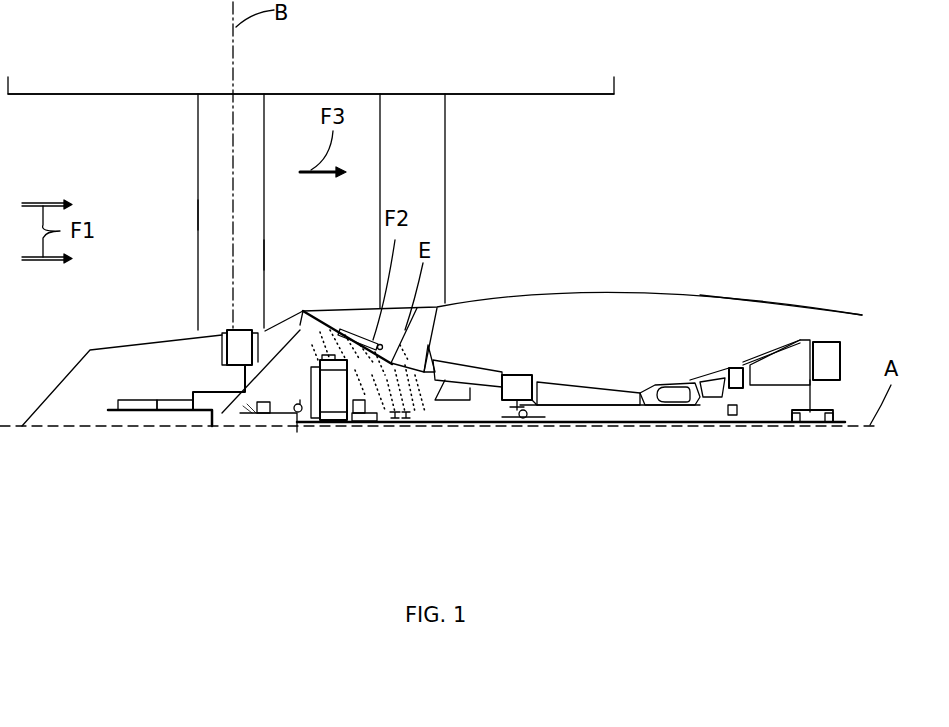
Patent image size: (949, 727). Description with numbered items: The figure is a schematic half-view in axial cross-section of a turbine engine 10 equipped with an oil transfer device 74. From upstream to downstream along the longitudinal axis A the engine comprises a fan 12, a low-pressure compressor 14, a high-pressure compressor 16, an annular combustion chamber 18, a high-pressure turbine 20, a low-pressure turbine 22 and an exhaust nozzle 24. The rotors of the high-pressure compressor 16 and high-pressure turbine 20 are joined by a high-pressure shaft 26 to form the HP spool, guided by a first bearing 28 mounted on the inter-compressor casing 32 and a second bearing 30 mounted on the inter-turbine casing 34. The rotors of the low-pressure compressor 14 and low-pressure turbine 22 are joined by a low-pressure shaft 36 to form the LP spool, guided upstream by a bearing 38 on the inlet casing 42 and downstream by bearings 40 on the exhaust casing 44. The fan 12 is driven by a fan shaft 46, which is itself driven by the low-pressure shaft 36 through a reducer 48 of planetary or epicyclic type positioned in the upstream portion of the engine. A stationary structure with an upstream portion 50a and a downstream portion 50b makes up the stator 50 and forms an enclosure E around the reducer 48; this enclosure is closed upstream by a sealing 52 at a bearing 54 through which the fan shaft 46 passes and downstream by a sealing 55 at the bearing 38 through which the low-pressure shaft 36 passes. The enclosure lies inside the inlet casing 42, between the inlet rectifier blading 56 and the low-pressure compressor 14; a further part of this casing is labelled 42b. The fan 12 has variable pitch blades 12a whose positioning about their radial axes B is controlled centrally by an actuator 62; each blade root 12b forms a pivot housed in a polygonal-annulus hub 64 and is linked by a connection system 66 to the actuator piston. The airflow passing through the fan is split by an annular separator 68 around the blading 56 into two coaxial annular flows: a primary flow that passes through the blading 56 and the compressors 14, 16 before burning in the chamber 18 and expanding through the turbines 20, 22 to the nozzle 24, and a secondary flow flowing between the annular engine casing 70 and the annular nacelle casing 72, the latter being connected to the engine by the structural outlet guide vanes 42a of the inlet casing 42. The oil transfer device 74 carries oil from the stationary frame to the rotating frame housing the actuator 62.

The turbine engine 10 is at (729, 84).
The fan 12 is at (272, 122).
The variable pitch blades 12a is at (212, 215).
The root 12b is at (233, 327).
The low-pressure compressor 14 is at (475, 400).
The high-pressure compressor 16 is at (578, 407).
The annular combustion chamber 18 is at (676, 402).
The high-pressure turbine 20 is at (713, 400).
The low-pressure turbine 22 is at (770, 356).
The exhaust nozzle 24 is at (843, 313).
The high-pressure shaft 26 is at (645, 390).
The first bearing 28 is at (526, 420).
The second bearing 30 is at (737, 420).
The inter-compressor casing 32 is at (516, 375).
The inter-turbine casing 34 is at (736, 367).
The low-pressure shaft 36 is at (635, 423).
The bearing 38 is at (395, 425).
The bearings 40 is at (830, 425).
The inlet casing 42 is at (443, 325).
The outlet guide vanes 42a is at (427, 174).
The air outlet 42b is at (453, 329).
The exhaust casing 44 is at (840, 352).
The fan shaft 46 is at (187, 412).
The reducer 48 is at (329, 434).
The motor casing or stator 50 is at (397, 362).
The upstream portion 50a is at (275, 330).
The downstream portion 50b is at (430, 380).
The sealing 52 is at (255, 414).
The bearing 54 is at (268, 414).
The sealing 55 is at (403, 425).
The inlet rectifier blading 56 is at (350, 328).
The actuator 62 is at (133, 413).
The hub 64 is at (222, 345).
The connection system 66 is at (200, 387).
The annular separator 68 is at (300, 325).
The annular engine casing 70 is at (608, 288).
The annular nacelle casing 72 is at (563, 93).
The oil transfer device 74 is at (372, 422).